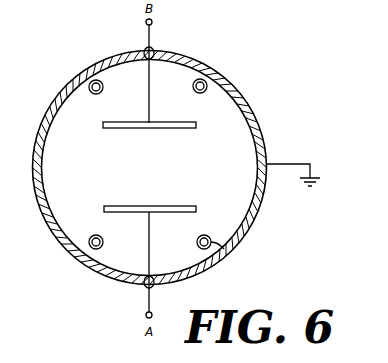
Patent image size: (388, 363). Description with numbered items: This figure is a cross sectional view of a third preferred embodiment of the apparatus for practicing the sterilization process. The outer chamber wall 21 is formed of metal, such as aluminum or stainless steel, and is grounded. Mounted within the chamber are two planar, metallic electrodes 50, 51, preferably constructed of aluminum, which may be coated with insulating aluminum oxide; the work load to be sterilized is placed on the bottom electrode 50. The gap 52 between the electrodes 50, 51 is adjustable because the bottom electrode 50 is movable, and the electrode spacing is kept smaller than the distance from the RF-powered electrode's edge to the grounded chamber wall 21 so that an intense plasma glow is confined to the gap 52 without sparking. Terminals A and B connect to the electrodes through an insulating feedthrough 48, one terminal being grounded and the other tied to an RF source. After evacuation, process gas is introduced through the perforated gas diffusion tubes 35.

The outer chamber wall 21 is at (256, 111).
The perforated gas diffusion tubes 35 is at (226, 250).
The insulating feedthrough 48 is at (146, 290).
The bottom electrode 50 is at (107, 205).
The electrode 51 is at (106, 129).
The gap 52 is at (178, 161).